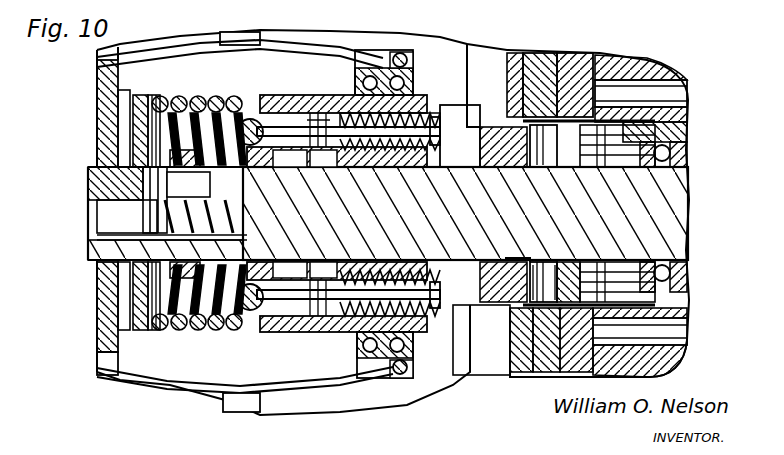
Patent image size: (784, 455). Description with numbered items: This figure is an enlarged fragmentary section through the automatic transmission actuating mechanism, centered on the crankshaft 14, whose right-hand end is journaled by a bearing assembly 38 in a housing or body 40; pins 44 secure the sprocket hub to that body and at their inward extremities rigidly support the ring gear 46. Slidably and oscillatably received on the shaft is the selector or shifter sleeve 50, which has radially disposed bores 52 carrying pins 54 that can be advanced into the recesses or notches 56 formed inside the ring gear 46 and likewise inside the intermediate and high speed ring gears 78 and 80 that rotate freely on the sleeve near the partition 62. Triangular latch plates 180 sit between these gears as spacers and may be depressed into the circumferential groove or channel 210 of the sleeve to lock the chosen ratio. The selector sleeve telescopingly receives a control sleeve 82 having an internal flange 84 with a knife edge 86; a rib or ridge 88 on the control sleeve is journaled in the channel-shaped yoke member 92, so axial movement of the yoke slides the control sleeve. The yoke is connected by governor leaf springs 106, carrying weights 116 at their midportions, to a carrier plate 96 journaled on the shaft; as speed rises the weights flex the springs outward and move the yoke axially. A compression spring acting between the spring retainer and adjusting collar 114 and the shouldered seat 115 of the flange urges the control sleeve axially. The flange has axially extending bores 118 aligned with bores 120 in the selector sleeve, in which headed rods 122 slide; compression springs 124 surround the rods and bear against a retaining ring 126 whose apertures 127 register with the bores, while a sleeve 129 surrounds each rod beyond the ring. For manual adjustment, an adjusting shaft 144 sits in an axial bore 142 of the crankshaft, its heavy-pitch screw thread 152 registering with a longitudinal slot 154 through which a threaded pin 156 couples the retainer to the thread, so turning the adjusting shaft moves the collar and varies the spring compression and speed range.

The crankshaft 14 is at (680, 233).
The bearing assembly 38 is at (687, 149).
The housing or body 40 is at (688, 117).
The pins 44 is at (630, 90).
The ring gear 46 is at (612, 72).
The selector or shifter sleeve 50 is at (468, 273).
The radially disposed bores 52 is at (512, 261).
The pins 54 is at (548, 282).
The recesses or notches 56 is at (610, 150).
The partition 62 is at (495, 40).
The ring gear 78 is at (540, 73).
The ring gear 80 is at (577, 80).
The control sleeve 82 is at (272, 95).
The internal flange 84 is at (270, 263).
The knife edge 86 is at (240, 168).
The rib or ridge 88 is at (383, 352).
The yoke member 92 is at (357, 355).
The plate 96 is at (110, 331).
The governor leaf springs 106 is at (163, 385).
The spring retainer and adjusting collar 114 is at (158, 329).
The shouldered seat 115 is at (265, 332).
The weights 116 is at (243, 412).
The axially extending bores 118 is at (258, 167).
The bores 120 is at (402, 273).
The rods 122 is at (237, 100).
The compression springs 124 is at (422, 103).
The retaining ring 126 is at (357, 167).
The apertures 127 is at (332, 167).
The sleeve 129 is at (318, 115).
The axial bore 142 is at (112, 202).
The adjusting shaft 144 is at (96, 236).
The screw thread 152 is at (170, 262).
The longitudinal slot 154 is at (112, 181).
The threaded pin 156 is at (150, 96).
The latch plates 180 is at (537, 378).
The groove or channel 210 is at (508, 125).